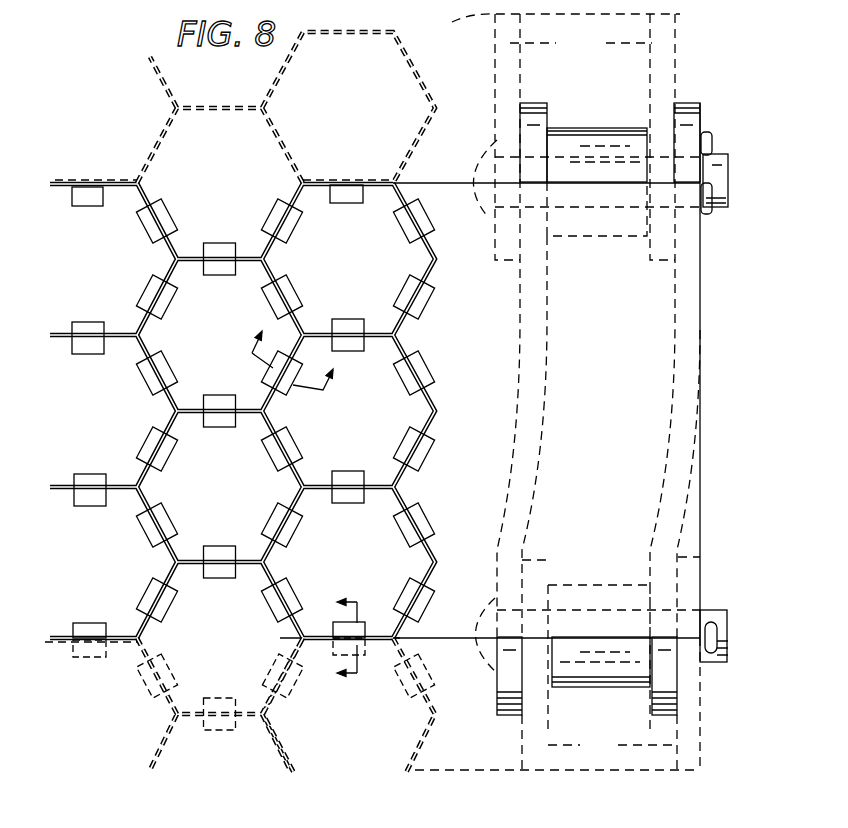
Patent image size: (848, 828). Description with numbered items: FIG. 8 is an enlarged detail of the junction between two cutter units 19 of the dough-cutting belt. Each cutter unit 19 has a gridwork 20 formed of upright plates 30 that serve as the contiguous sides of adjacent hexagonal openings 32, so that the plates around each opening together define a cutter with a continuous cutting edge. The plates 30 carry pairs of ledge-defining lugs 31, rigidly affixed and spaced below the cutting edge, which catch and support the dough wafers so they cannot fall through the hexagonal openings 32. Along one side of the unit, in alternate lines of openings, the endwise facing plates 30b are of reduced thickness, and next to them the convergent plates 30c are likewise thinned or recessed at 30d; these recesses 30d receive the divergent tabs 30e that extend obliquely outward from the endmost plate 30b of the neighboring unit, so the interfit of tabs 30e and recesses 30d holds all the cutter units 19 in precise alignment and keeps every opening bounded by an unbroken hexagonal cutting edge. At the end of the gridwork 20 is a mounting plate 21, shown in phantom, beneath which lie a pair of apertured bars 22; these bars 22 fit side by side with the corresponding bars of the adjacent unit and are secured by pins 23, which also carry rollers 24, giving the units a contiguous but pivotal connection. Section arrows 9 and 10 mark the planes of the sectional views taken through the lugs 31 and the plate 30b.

The section line 9- 9 is at (294, 357).
The section line 10- 10 is at (333, 642).
The cutter unit 19 is at (425, 183).
The gridwork 20 is at (188, 258).
The mounting plate 21 is at (462, 21).
The underlying bar 22 is at (685, 122).
The pin 23 is at (722, 173).
The roller 24 is at (617, 677).
The upright plate 30 is at (303, 322).
The endwise facing plate 30b is at (317, 188).
The convergent plate 30c is at (296, 626).
The recess 30d is at (300, 638).
The tab 30e is at (137, 182).
The ledge-defining lug 31 is at (163, 310).
The hexagonal opening 32 is at (233, 497).